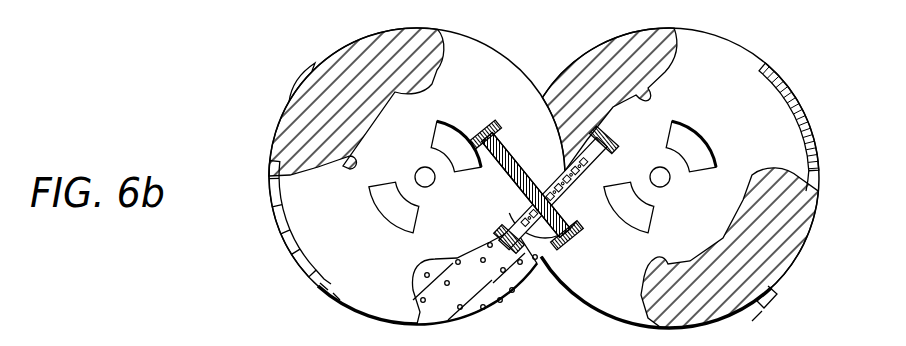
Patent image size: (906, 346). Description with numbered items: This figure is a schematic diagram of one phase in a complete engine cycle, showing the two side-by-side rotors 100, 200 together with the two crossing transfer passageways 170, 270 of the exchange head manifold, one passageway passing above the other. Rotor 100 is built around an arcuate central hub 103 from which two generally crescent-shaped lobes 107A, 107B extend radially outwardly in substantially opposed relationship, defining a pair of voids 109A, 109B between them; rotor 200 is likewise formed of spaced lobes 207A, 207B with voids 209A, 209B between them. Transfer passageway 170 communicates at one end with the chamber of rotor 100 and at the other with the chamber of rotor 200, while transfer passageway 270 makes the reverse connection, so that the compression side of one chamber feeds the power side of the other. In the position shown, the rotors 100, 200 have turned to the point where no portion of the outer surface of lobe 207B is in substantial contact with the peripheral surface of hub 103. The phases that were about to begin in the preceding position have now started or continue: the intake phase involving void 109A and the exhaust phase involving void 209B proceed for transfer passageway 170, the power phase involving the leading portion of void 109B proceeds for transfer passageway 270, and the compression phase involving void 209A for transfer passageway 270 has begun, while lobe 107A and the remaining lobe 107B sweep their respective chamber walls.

The rotor 100 is at (470, 246).
The hub 103 is at (407, 150).
The lobe 107A is at (367, 268).
The lobe 107B is at (527, 96).
The void 109A is at (373, 108).
The void 109B is at (487, 302).
The transfer passageway 170 is at (545, 248).
The rotor 200 is at (720, 250).
The lobe 207A is at (760, 106).
The lobe 207B is at (627, 288).
The void 209A is at (648, 90).
The void 209B is at (743, 296).
The transfer passageway 270 is at (618, 163).